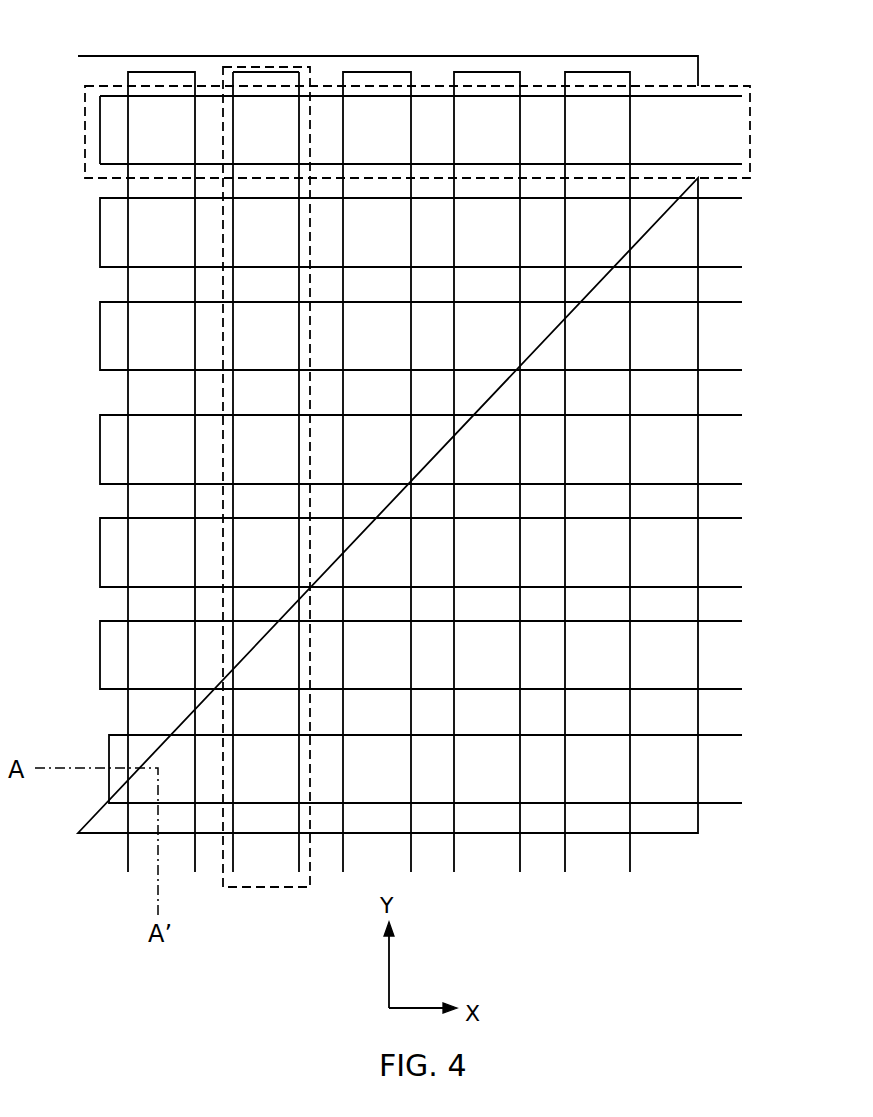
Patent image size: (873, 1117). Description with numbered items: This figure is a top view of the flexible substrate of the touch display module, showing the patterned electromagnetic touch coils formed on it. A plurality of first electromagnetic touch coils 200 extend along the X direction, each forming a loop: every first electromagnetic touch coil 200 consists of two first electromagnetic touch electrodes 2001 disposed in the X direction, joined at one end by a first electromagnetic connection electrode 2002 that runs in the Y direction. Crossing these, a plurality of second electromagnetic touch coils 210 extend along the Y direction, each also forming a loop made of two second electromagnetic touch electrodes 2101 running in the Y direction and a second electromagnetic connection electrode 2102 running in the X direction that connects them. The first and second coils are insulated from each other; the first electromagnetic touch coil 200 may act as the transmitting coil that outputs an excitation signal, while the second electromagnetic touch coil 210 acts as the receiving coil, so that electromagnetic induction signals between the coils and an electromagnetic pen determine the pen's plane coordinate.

The first electromagnetic touch coil 200 is at (537, 86).
The first electromagnetic touch electrode 2001 is at (719, 95).
The first electromagnetic connection electrode 2002 is at (100, 140).
The second electromagnetic touch coil 210 is at (255, 66).
The second electromagnetic touch electrode 2101 is at (233, 122).
The second electromagnetic connection electrode 2102 is at (280, 72).